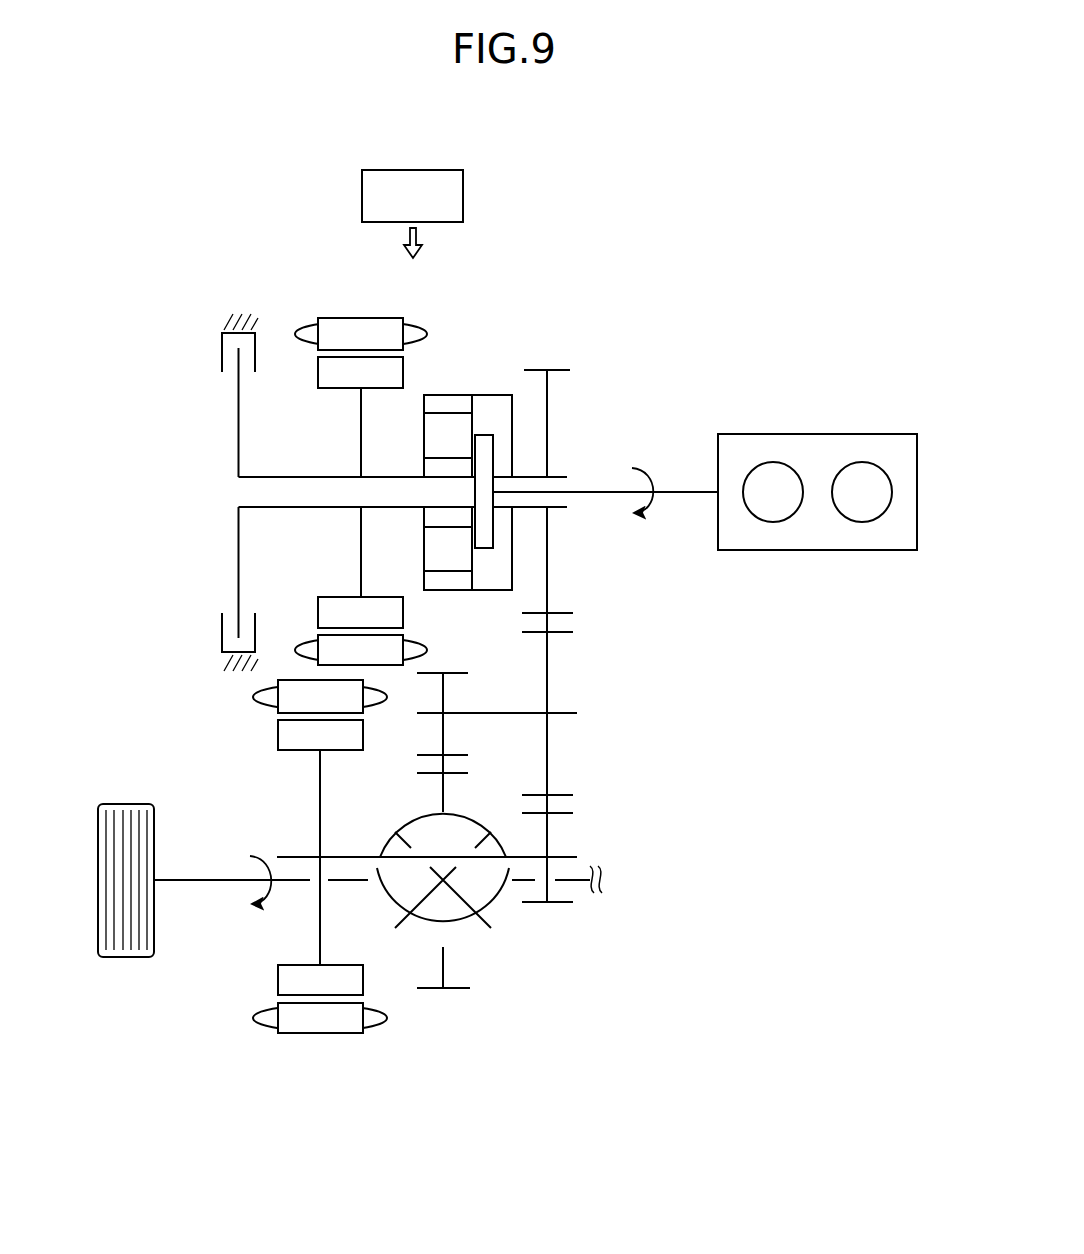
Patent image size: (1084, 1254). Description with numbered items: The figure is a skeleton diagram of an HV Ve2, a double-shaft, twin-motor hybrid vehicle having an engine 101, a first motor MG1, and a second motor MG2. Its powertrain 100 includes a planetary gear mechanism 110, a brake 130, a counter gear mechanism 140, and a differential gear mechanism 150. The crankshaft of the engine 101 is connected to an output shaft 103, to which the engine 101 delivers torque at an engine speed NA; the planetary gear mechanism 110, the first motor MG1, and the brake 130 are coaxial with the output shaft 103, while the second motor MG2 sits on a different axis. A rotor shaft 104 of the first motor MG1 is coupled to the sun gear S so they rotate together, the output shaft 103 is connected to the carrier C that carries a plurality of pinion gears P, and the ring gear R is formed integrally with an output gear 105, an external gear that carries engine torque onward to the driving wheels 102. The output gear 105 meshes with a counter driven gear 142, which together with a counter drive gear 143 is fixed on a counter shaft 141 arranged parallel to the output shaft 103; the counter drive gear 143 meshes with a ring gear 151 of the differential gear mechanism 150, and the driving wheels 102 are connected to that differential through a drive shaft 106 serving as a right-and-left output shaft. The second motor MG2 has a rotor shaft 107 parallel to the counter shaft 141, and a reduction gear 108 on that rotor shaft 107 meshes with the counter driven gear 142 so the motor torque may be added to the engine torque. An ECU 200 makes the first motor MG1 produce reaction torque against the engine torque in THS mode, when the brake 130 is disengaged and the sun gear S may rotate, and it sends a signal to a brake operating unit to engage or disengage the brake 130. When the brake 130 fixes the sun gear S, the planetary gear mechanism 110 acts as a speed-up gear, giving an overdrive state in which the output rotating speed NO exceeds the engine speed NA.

The ECU 200 is at (441, 168).
The first motor MG1 is at (358, 306).
The second motor MG2 is at (318, 1048).
The brake 130 is at (191, 363).
The rotor shaft 104 is at (296, 476).
The planetary gear mechanism 110 is at (463, 376).
The ring gear R is at (440, 398).
The carrier C is at (492, 434).
The pinion gears P is at (437, 436).
The sun gear S is at (435, 514).
The output shaft 103 is at (593, 490).
The engine speed NA is at (639, 506).
The engine 101 is at (848, 433).
The powertrain 100 is at (535, 263).
The HV Ve2 is at (692, 289).
The output gear 105 is at (575, 613).
The counter driven gear 142 is at (575, 632).
The counter gear mechanism 140 is at (604, 724).
The counter shaft 141 is at (501, 712).
The counter drive gear 143 is at (468, 755).
The ring gear 151 is at (468, 773).
The reduction gear 108 is at (575, 813).
The rotor shaft 107 is at (349, 856).
The drive shaft 106 is at (218, 884).
The rotating speed of the output shaft NO is at (268, 894).
The driving wheels 102 is at (122, 960).
The differential gear mechanism 150 is at (497, 943).